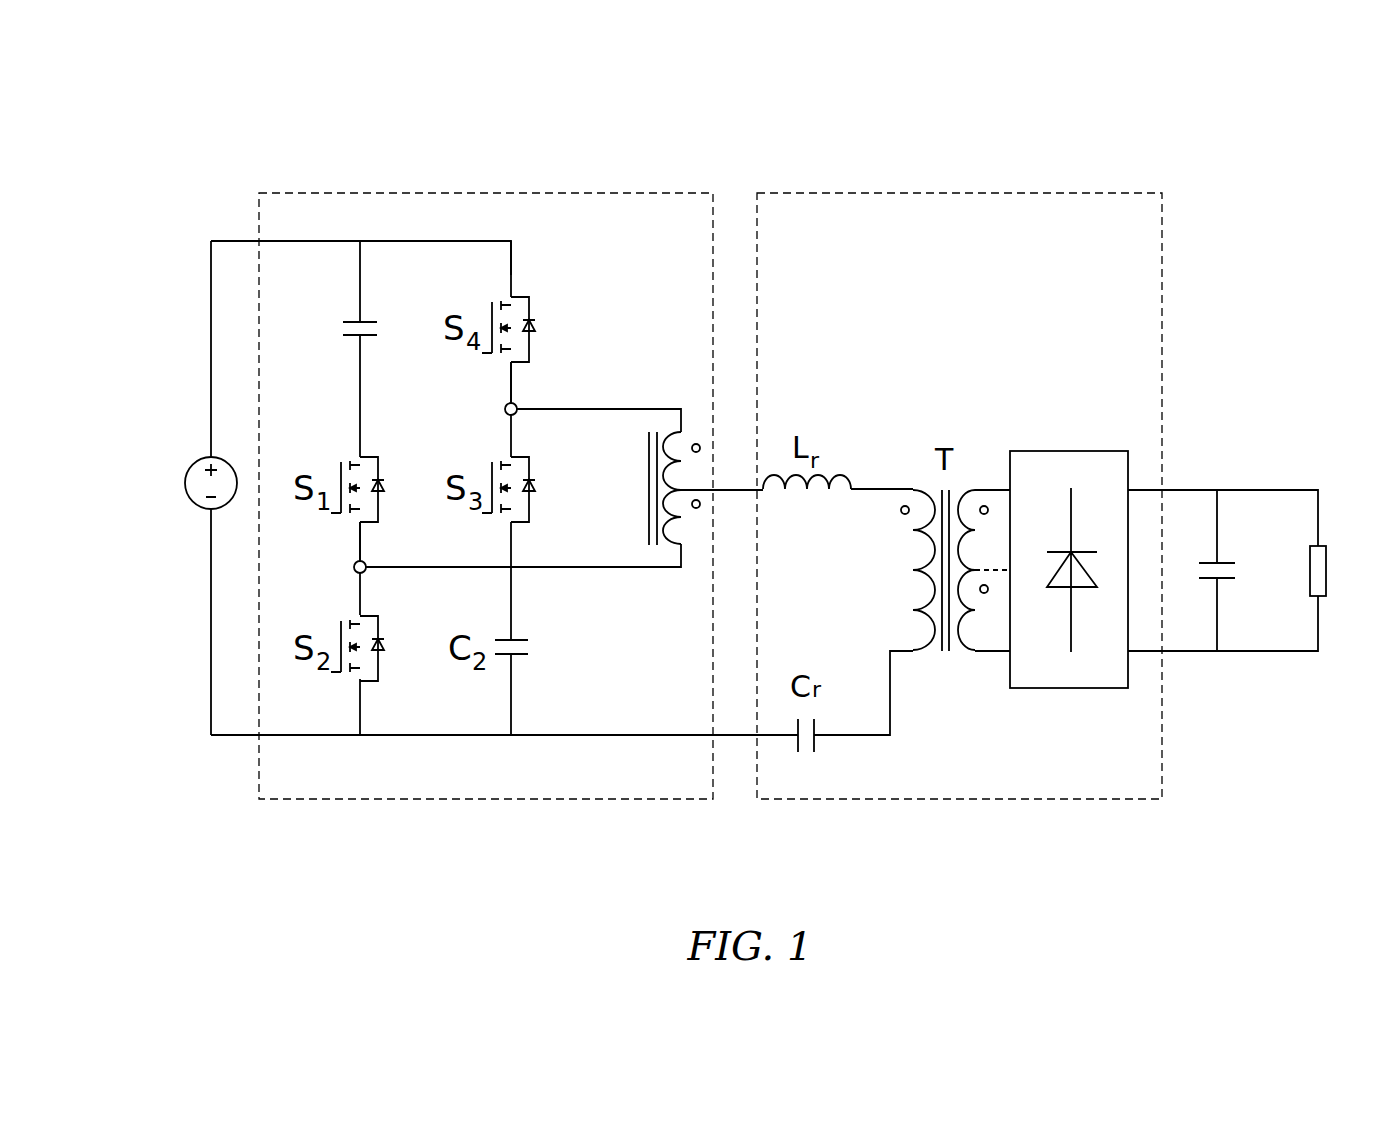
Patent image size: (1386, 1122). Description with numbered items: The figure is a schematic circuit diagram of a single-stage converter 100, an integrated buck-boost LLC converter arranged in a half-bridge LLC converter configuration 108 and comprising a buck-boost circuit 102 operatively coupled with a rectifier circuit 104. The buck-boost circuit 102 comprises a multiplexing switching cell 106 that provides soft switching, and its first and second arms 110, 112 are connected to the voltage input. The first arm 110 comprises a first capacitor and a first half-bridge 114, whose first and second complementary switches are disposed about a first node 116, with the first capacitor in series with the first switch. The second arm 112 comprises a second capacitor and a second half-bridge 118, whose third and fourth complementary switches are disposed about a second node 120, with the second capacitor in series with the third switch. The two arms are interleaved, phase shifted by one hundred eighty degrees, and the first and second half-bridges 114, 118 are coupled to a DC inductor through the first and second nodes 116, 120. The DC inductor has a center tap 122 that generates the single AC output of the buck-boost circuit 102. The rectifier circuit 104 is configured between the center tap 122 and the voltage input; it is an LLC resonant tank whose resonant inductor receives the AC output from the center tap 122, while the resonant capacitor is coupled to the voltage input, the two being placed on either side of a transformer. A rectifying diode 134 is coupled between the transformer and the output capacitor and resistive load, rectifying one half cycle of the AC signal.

The single-stage converter 100 is at (1257, 160).
The buck-boost circuit 102 is at (620, 240).
The rectifier circuit 104 is at (933, 243).
The multiplexing switching cell 106 is at (307, 711).
The half-bridge LLC converter configuration 108 is at (1257, 225).
The first arm 110 is at (362, 260).
The second arm 112 is at (512, 260).
The first half-bridge 114 is at (360, 540).
The first node 116 is at (367, 571).
The second half-bridge 118 is at (511, 380).
The second node 120 is at (517, 405).
The center tap 122 is at (703, 490).
The rectifying diode 134 is at (1053, 460).